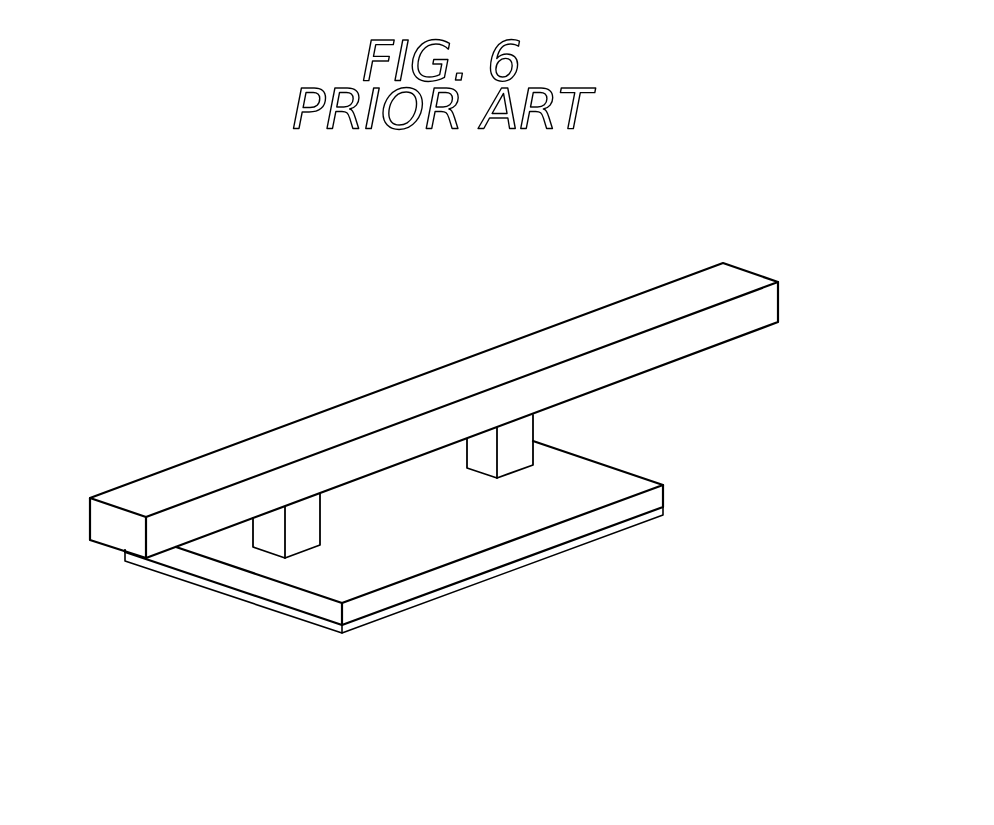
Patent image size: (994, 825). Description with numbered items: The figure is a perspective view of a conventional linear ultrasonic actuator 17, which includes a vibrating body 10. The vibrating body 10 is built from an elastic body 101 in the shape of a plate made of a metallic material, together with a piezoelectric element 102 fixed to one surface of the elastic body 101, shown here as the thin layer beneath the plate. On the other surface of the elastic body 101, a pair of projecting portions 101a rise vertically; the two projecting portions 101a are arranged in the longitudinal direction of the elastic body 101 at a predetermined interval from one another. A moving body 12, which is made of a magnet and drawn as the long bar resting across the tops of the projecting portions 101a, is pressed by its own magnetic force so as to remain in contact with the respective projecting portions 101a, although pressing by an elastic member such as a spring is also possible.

The linear ultrasonic actuator 17 is at (578, 260).
The moving body 12 is at (403, 400).
The vibrating body 10 is at (612, 482).
The elastic body 101 is at (613, 511).
The projecting portions 101a is at (520, 433).
The piezoelectric element 102 is at (368, 624).